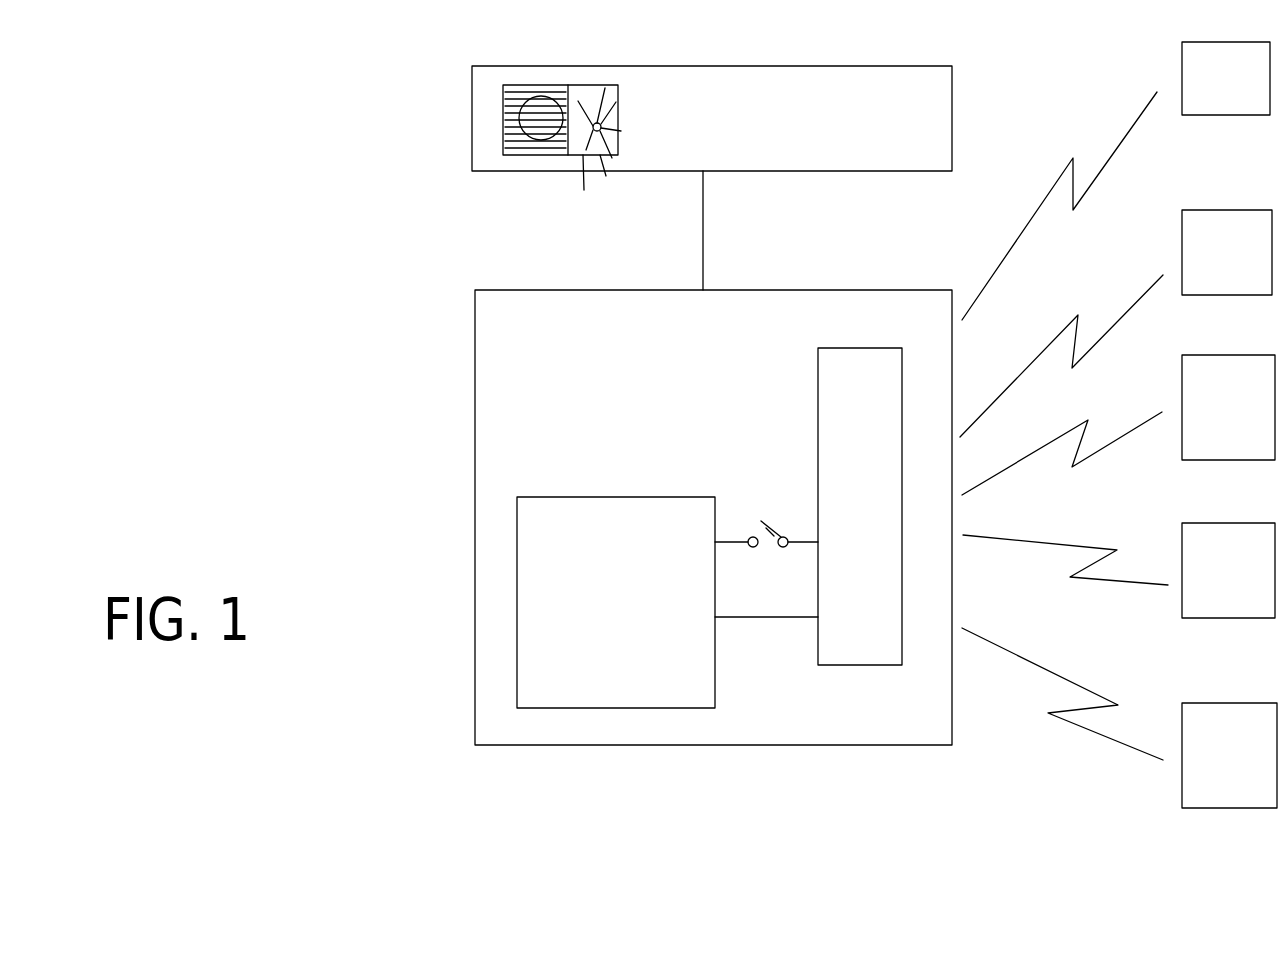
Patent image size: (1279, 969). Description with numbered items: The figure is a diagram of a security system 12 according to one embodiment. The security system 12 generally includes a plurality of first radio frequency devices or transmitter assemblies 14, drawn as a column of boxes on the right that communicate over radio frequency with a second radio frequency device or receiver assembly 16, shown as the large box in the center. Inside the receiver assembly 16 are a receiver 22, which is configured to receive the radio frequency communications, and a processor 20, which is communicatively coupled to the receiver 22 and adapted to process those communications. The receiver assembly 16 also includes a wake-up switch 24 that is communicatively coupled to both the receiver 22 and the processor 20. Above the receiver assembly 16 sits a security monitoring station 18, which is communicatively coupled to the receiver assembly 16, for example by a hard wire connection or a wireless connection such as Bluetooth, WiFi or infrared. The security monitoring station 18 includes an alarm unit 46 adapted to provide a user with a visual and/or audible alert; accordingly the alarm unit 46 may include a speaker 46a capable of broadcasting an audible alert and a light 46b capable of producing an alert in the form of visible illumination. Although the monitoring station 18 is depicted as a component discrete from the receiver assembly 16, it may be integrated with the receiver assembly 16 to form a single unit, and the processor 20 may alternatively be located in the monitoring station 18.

The security system 12 is at (258, 134).
The transmitter assemblies 14 is at (1213, 115).
The receiver assembly 16 is at (475, 428).
The security monitoring station 18 is at (890, 66).
The processor 20 is at (612, 708).
The receiver 22 is at (855, 665).
The wake-up switch 24 is at (766, 547).
The alarm unit 46 is at (526, 132).
The speaker 46a is at (528, 156).
The light 46b is at (601, 130).